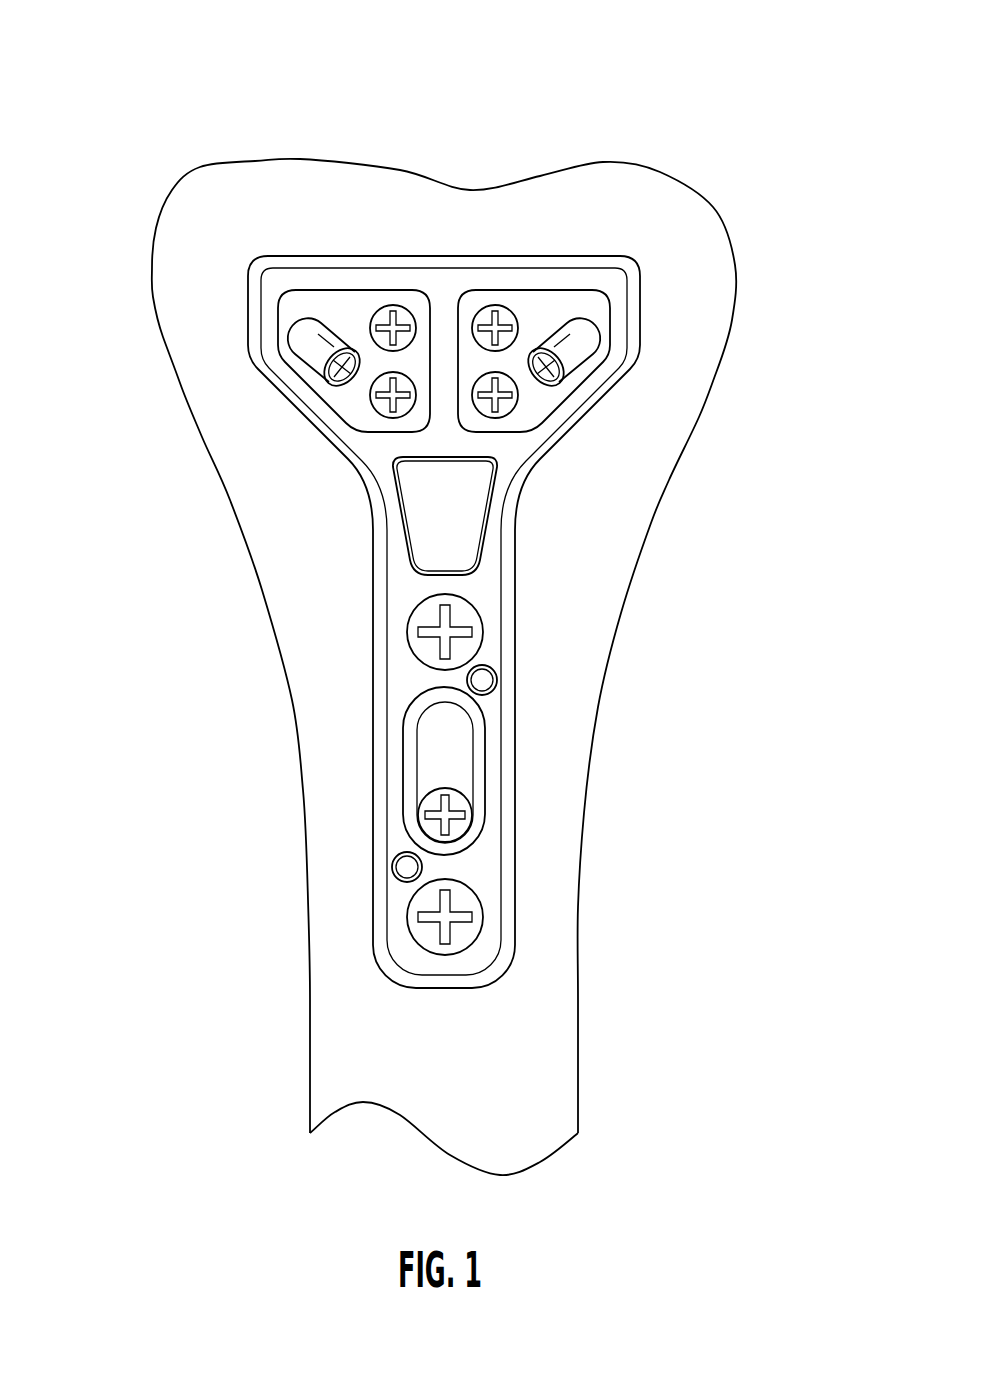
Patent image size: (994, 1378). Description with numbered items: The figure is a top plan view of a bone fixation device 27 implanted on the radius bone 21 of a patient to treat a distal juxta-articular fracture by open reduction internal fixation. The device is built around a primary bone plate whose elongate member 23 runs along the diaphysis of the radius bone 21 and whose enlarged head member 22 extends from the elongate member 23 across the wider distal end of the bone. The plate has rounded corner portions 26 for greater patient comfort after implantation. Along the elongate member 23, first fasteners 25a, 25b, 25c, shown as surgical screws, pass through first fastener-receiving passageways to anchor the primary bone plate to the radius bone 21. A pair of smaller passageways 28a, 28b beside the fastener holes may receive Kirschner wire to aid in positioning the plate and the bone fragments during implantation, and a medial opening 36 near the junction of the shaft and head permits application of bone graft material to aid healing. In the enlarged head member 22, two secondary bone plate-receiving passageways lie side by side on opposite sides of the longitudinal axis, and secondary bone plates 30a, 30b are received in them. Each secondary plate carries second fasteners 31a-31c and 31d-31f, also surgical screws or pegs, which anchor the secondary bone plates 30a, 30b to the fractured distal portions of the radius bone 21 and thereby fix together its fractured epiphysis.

The bone fixation device 27 is at (622, 130).
The radius bone 21 is at (693, 182).
The enlarged head member 22 is at (461, 273).
The elongate member 23 is at (441, 706).
The rounded corner portions 26 is at (517, 897).
The secondary bone plate 30a is at (318, 288).
The secondary bone plate 30b is at (478, 287).
The second fasteners 31a-31c is at (368, 379).
The second fasteners 31d-31f is at (503, 380).
The medial opening 36 is at (463, 510).
The first fastener 25a is at (443, 893).
The first fastener 25b is at (443, 790).
The first fastener 25c is at (413, 615).
The passageway 28a is at (482, 680).
The passageway 28b is at (403, 867).